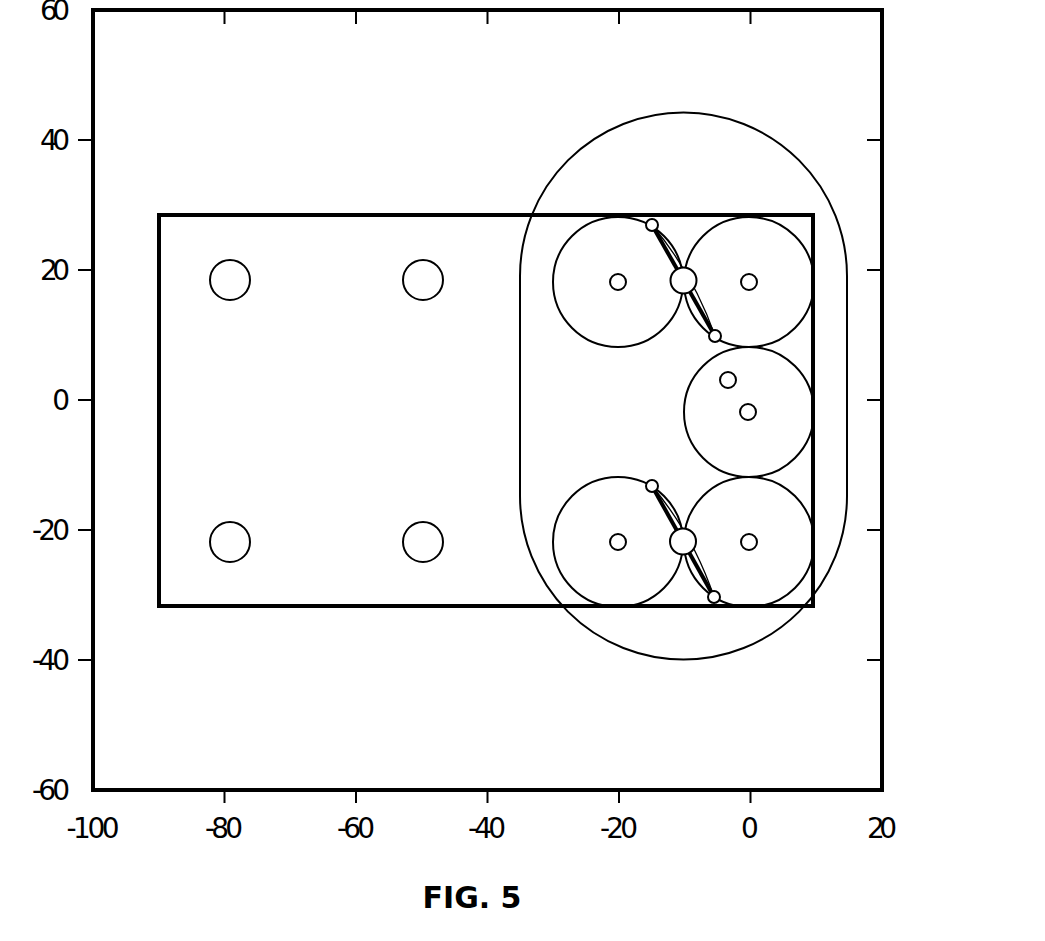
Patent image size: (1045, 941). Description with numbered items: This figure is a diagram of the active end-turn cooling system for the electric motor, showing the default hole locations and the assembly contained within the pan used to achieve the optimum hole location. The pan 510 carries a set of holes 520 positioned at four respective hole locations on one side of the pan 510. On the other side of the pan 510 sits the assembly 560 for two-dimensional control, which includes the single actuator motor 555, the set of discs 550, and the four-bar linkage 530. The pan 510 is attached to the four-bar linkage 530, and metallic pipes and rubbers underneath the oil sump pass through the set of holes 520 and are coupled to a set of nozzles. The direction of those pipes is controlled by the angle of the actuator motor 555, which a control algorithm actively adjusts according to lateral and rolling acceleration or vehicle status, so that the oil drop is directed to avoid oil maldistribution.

The pan 510 is at (797, 188).
The set of holes 520 is at (423, 248).
The four-bar linkage 530 is at (655, 502).
The set of discs 550 is at (722, 232).
The actuator motor 555 is at (800, 466).
The assembly 560 is at (715, 117).